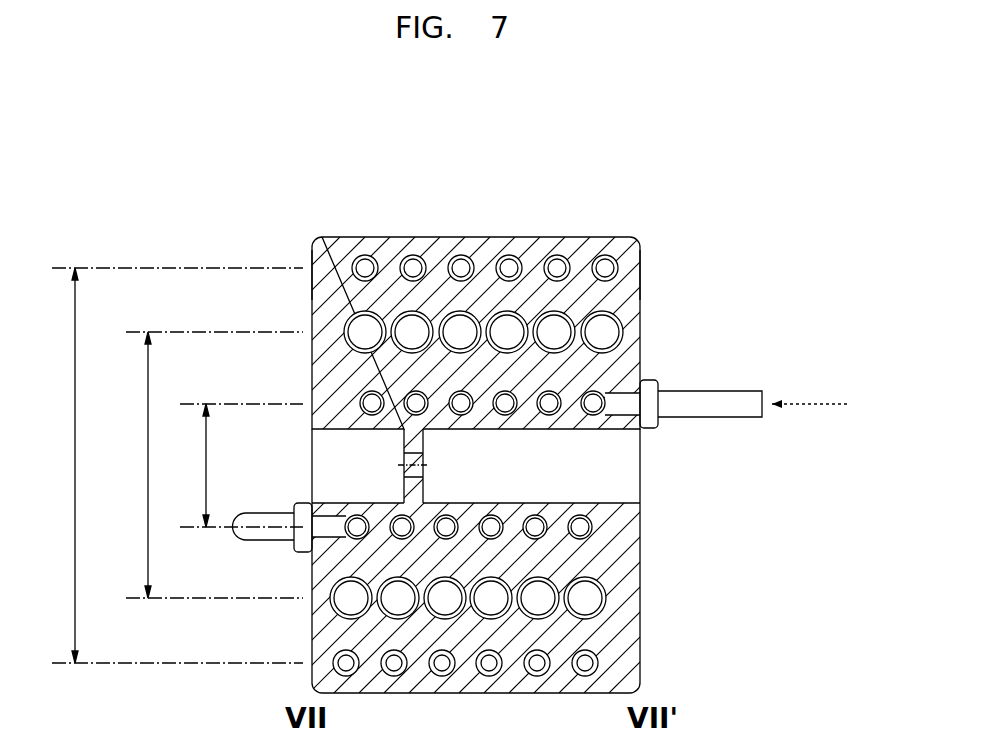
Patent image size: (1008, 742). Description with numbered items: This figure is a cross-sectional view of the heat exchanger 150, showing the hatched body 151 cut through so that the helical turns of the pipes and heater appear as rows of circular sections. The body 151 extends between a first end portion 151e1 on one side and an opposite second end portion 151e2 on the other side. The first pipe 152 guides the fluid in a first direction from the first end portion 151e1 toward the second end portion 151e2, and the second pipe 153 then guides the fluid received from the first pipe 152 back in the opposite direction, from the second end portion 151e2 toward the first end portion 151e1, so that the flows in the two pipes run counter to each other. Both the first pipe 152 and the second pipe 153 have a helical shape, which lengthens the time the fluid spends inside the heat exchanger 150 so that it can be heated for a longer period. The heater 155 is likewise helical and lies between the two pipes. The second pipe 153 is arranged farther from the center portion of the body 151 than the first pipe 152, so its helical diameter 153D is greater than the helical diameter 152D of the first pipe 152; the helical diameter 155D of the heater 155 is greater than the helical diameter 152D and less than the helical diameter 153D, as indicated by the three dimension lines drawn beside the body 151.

The heat exchanger 150 is at (583, 170).
The body 151 is at (540, 244).
The first end portion 151e1 is at (640, 263).
The second end portion 151e2 is at (312, 251).
The first pipe 152 is at (592, 528).
The heater 155 is at (606, 598).
The second pipe 153 is at (598, 663).
The helical diameter of the first pipe 152D is at (240, 465).
The helical diameter of the heater 155D is at (211, 465).
The helical diameter of the second pipe 153D is at (174, 465).